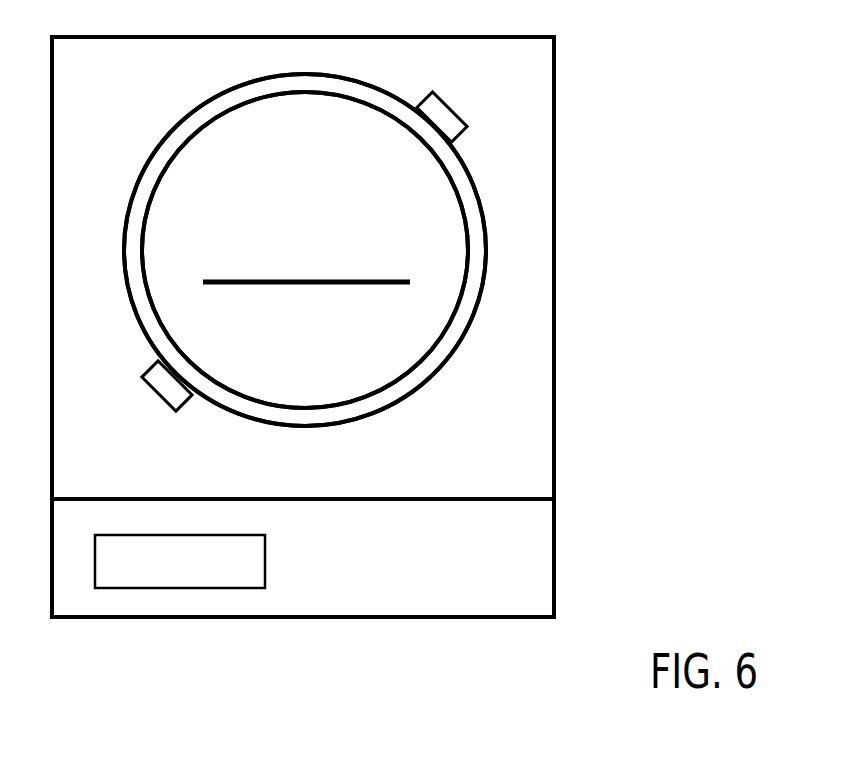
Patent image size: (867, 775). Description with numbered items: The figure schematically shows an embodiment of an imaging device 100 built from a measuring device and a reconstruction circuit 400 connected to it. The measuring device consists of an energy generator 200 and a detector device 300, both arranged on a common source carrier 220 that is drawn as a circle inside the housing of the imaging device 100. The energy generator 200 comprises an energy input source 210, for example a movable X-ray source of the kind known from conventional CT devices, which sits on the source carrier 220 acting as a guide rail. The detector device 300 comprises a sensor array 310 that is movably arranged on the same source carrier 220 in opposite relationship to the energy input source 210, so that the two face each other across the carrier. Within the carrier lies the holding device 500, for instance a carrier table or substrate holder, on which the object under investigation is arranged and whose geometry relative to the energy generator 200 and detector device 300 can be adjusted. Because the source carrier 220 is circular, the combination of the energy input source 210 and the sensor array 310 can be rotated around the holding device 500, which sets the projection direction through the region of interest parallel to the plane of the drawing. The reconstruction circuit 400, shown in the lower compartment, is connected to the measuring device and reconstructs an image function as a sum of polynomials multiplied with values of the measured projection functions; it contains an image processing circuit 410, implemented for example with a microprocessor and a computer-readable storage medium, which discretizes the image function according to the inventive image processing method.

The imaging device 100 is at (633, 85).
The energy generator 200 is at (528, 286).
The detector device 300 is at (728, 349).
The energy input source 210 is at (448, 122).
The source carrier 220 is at (388, 398).
The sensor array 310 is at (168, 390).
The reconstruction circuit 400 is at (544, 544).
The image processing circuit 410 is at (133, 577).
The holding device 500 is at (360, 284).